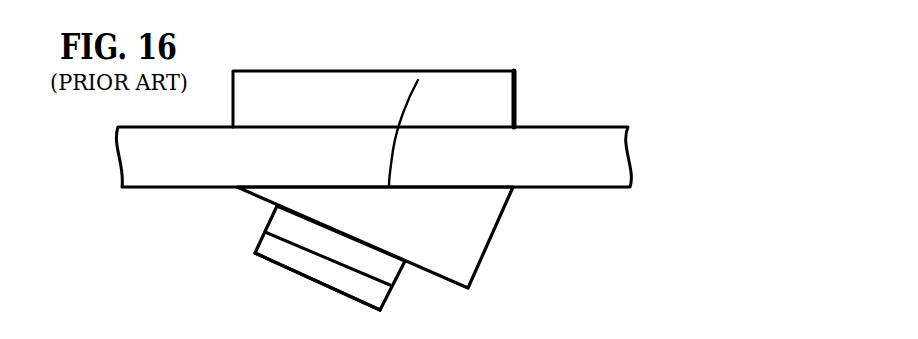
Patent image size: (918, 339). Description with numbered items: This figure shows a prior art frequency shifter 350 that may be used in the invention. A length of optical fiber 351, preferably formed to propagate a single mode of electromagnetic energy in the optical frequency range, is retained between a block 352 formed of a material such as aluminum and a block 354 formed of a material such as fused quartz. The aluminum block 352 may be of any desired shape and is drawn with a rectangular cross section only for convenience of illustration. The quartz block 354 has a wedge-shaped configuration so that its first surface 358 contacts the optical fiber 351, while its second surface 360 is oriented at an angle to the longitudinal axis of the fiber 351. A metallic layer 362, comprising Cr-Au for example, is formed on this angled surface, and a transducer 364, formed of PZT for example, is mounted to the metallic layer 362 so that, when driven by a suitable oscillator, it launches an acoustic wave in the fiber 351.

The frequency shifter 350 is at (657, 108).
The optical fiber 351 is at (583, 127).
The aluminum block 352 is at (316, 72).
The quartz block 354 is at (499, 220).
The first surface 358 is at (418, 80).
The second surface 360 is at (400, 262).
The metallic layer 362 is at (265, 232).
The transducer 364 is at (300, 275).